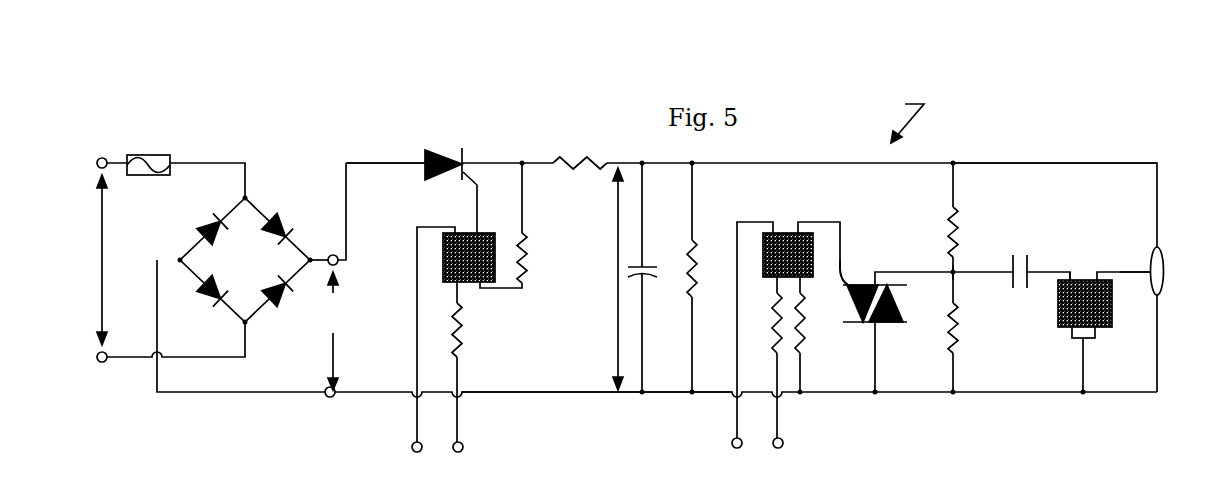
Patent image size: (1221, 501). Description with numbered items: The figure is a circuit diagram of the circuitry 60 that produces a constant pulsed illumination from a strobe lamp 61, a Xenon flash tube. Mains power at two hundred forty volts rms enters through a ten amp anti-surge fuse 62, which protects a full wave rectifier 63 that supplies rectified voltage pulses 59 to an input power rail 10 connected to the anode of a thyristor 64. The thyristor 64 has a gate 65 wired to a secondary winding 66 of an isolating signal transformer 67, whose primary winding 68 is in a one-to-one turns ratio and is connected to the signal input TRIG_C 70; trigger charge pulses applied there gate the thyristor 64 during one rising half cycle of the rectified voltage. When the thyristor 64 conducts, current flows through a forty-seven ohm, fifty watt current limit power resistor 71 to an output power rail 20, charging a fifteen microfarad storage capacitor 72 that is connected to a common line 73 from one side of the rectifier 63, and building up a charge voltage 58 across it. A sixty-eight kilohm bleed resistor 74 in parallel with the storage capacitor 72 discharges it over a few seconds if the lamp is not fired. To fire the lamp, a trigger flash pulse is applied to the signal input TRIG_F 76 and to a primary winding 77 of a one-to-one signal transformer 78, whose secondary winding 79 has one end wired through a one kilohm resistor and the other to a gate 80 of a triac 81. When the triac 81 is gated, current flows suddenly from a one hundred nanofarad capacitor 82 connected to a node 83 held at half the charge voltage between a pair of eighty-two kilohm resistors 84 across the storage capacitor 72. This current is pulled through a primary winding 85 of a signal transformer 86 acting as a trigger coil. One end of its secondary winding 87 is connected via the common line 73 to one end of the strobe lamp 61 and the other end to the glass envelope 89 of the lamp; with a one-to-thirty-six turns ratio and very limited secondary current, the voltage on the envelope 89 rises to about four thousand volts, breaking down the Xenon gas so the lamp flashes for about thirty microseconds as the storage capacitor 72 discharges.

The input power rail 10 is at (383, 158).
The output power rail 20 is at (1068, 162).
The charge voltage 58 is at (618, 350).
The rectified voltage pulses 59 is at (334, 350).
The circuitry 60 is at (896, 120).
The strobe lamp 61 is at (100, 203).
The anti-surge fuse 62 is at (172, 153).
The full wave rectifier 63 is at (262, 185).
The thyristor 64 is at (425, 158).
The gate 65 is at (478, 182).
The secondary winding 66 is at (486, 242).
The isolating signal transformer 67 is at (485, 288).
The primary winding 68 is at (445, 287).
The input TRIG_C 70 is at (424, 455).
The current limit power resistor 71 is at (572, 172).
The storage capacitor 72 is at (652, 258).
The common line 73 is at (575, 397).
The bleed resistor 74 is at (688, 292).
The signal input TRIG_F 76 is at (750, 452).
The primary winding 77 is at (763, 277).
The signal transformer 78 is at (790, 230).
The secondary winding 79 is at (813, 248).
The gate 80 is at (848, 272).
The triac 81 is at (905, 308).
The capacitor 82 is at (1035, 258).
The node 83 is at (952, 266).
The resistors 84 is at (950, 215).
The primary winding 85 is at (1060, 325).
The signal transformer 86 is at (1058, 300).
The secondary winding 87 is at (1112, 315).
The glass envelope 89 is at (1148, 268).